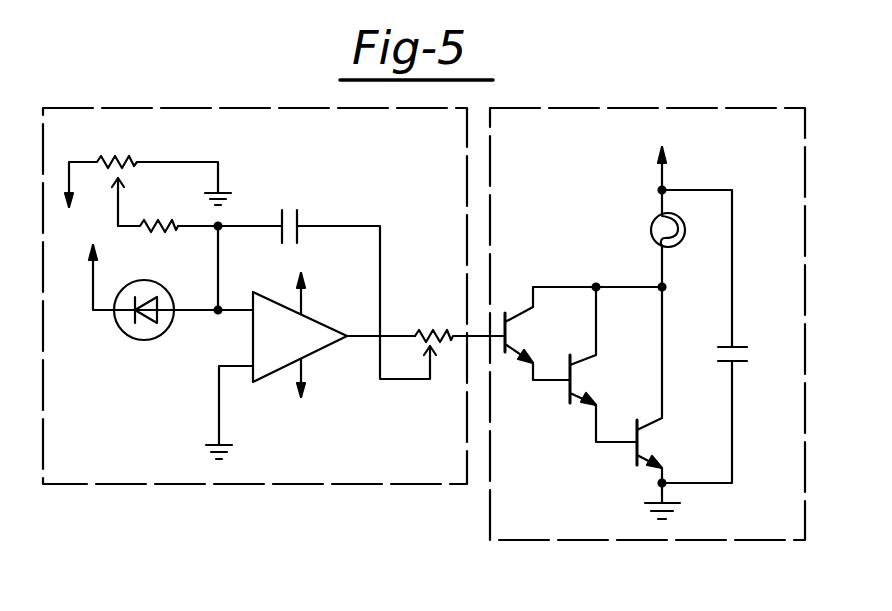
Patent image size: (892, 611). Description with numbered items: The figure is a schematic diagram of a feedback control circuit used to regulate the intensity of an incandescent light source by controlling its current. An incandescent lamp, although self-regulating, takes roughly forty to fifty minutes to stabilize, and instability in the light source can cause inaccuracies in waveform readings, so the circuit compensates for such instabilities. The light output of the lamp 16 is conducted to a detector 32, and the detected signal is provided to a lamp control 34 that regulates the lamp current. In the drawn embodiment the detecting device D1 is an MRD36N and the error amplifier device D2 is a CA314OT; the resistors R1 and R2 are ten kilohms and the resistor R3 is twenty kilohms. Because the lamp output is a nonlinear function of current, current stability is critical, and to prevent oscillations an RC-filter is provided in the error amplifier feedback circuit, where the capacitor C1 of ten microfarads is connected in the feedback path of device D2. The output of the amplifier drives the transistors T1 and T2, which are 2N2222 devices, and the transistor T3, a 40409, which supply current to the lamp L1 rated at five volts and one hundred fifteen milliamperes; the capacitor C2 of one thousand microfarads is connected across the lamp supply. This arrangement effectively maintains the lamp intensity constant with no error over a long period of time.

The lamp 16 is at (660, 214).
The detector 32 is at (312, 486).
The lamp control 34 is at (622, 540).
The resistor R1 is at (148, 179).
The resistor R2 is at (168, 212).
The resistor R3 is at (442, 332).
The capacitor C1 is at (299, 258).
The capacitor C2 is at (721, 336).
The device D1 is at (171, 312).
The device D2 is at (310, 366).
The transistor T1 is at (583, 333).
The transistor T2 is at (603, 364).
The transistor T3 is at (659, 385).
The lamp L1 is at (649, 217).